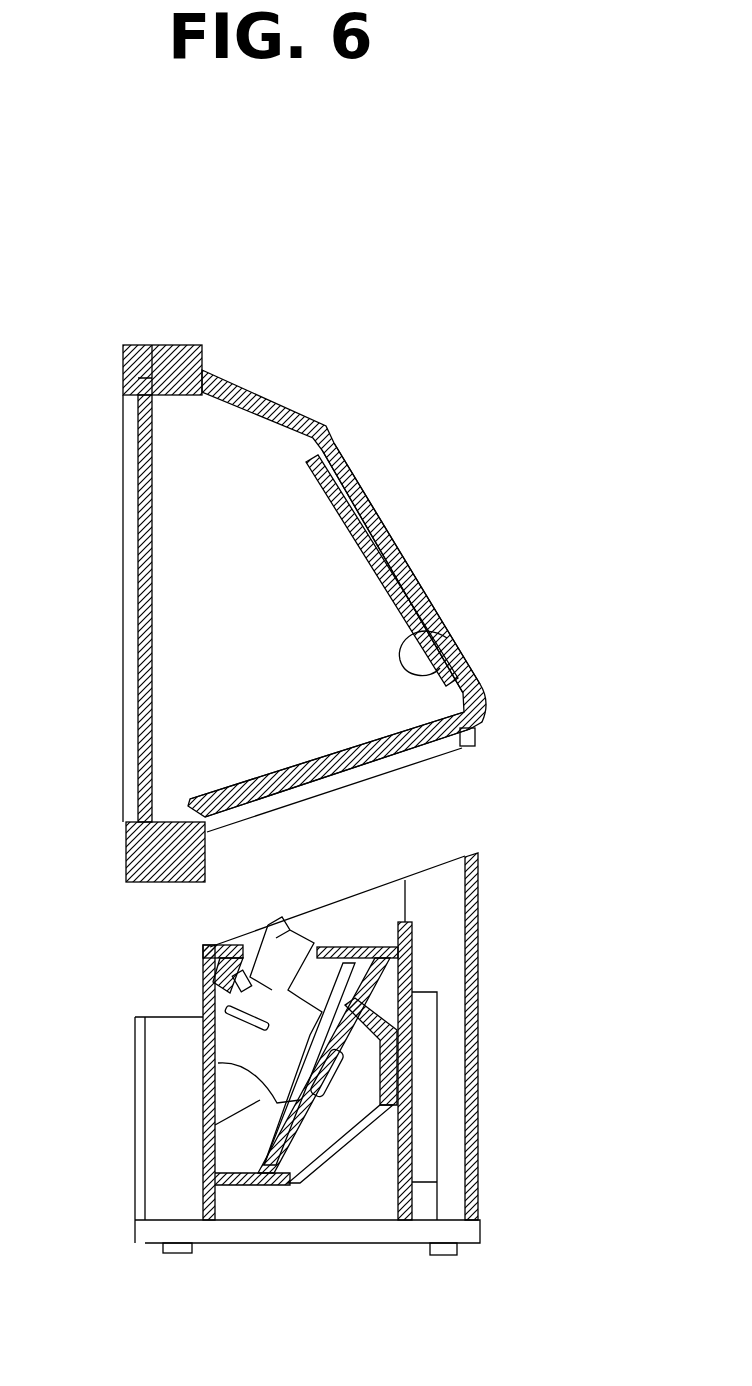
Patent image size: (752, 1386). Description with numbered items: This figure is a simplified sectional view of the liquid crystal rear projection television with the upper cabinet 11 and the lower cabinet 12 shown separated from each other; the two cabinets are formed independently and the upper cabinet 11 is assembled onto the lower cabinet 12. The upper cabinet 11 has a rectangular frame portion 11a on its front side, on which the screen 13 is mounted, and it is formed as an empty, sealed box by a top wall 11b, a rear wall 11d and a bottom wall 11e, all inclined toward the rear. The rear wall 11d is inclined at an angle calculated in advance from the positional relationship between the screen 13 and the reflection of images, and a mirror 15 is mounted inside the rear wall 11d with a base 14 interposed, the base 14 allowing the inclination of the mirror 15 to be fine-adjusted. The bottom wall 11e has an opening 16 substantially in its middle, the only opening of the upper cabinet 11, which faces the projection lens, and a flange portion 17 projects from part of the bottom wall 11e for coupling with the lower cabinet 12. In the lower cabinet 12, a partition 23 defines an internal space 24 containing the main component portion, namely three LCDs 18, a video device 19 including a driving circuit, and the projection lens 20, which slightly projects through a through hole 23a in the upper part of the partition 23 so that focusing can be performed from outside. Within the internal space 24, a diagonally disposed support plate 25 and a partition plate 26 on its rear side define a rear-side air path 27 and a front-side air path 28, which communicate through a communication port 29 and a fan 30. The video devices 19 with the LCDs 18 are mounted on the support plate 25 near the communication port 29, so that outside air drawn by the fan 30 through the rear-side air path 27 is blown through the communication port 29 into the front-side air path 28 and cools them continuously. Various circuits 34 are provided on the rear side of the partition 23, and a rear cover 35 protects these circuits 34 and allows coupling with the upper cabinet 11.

The upper cabinet 11 is at (352, 401).
The rectangular frame portion 11a is at (165, 345).
The top wall 11b is at (281, 405).
The rear wall 11d is at (431, 581).
The bottom wall 11e is at (428, 748).
The lower cabinet 12 is at (502, 983).
The screen 13 is at (148, 600).
The base 14 is at (372, 497).
The mirror 15 is at (447, 638).
The opening 16 is at (318, 790).
The flange portion 17 is at (478, 728).
The LCD 18 is at (200, 985).
The video device 19 is at (233, 1063).
The projection lens 20 is at (285, 920).
The partition 23 is at (413, 1182).
The through hole 23a is at (240, 958).
The internal space 24 is at (330, 1208).
The support plate 25 is at (335, 1030).
The partition plate 26 is at (380, 1130).
The rear-side air path 27 is at (342, 1123).
The front-side air path 28 is at (230, 1143).
The communication port 29 is at (300, 1058).
The fan 30 is at (332, 1058).
The circuits 34 is at (423, 1002).
The rear cover 35 is at (480, 882).